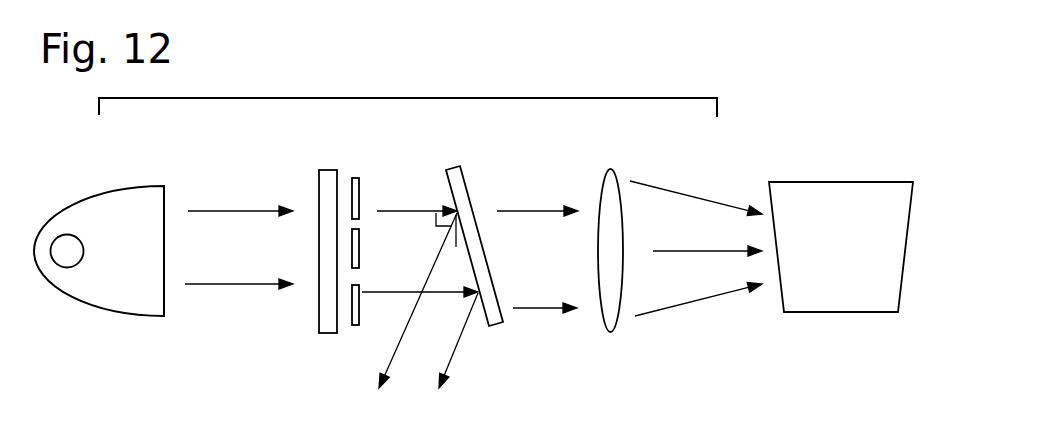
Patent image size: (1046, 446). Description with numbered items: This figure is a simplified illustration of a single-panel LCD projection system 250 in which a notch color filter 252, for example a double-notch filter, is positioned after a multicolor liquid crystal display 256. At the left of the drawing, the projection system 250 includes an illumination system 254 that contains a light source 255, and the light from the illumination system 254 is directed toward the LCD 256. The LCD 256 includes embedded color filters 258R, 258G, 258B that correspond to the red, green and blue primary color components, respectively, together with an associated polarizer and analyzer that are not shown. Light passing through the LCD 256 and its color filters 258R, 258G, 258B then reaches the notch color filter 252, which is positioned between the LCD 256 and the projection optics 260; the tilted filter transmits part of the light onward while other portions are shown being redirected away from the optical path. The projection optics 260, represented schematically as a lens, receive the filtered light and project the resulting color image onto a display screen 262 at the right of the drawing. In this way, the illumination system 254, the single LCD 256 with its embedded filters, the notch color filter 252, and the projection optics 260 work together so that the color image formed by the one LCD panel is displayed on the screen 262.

The single-panel LCD projection system 250 is at (433, 98).
The notch color filter 252 is at (488, 252).
The illumination system 254 is at (125, 331).
The light source 255 is at (61, 268).
The multicolor liquid crystal display 256 is at (331, 352).
The embedded color filter for red 258R is at (359, 177).
The embedded color filter for green 258G is at (360, 263).
The embedded color filter for blue 258B is at (357, 326).
The projection optics 260 is at (610, 331).
The display screen 262 is at (804, 313).